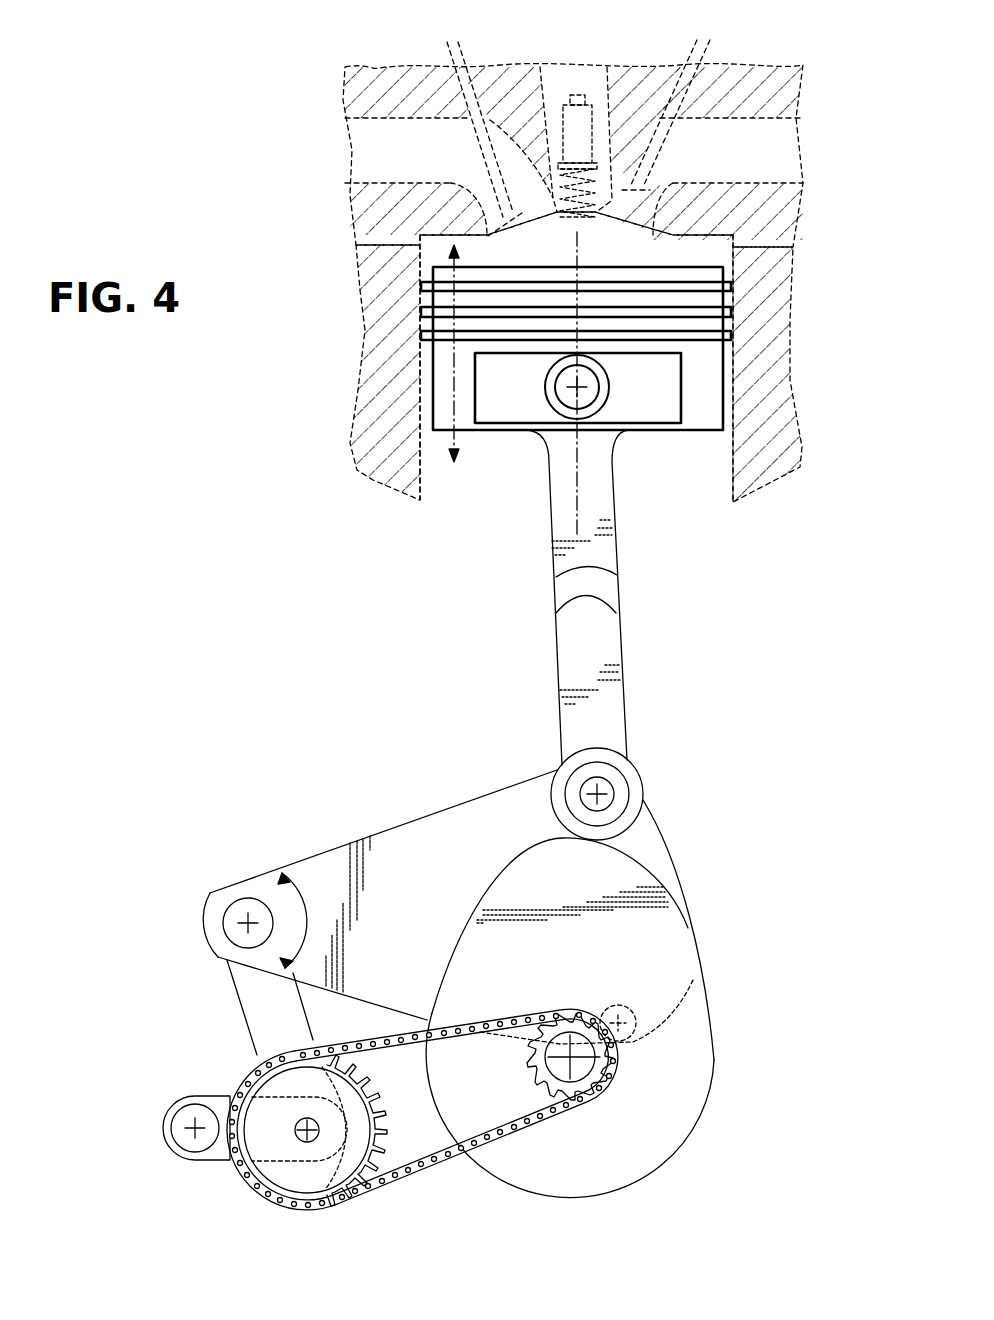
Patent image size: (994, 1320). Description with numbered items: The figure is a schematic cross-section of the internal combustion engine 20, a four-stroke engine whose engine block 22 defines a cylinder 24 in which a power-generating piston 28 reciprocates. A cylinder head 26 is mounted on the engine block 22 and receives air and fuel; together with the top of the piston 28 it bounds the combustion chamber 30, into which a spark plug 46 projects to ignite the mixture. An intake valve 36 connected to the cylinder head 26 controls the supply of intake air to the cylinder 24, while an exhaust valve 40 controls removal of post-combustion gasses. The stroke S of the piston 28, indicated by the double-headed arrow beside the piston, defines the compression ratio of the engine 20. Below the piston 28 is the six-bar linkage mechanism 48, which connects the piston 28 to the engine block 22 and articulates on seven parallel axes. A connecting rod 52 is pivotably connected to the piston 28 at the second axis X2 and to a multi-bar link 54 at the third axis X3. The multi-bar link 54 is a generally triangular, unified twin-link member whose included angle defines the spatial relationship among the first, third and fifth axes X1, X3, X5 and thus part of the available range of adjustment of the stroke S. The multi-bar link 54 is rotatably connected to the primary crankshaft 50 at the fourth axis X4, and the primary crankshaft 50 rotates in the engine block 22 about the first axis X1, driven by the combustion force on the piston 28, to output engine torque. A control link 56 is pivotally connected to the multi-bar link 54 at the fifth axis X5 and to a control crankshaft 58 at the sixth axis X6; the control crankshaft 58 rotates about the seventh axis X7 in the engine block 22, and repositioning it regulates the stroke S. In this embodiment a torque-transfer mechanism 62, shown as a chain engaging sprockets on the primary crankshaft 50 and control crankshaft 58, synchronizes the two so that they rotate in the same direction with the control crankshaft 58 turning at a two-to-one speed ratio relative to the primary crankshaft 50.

The internal combustion engine 20 is at (667, 550).
The engine block 22 is at (774, 364).
The cylinder 24 is at (733, 307).
The cylinder head 26 is at (768, 235).
The piston 28 is at (652, 268).
The combustion chamber 30 is at (542, 258).
The intake valve 36 is at (495, 190).
The exhaust valve 40 is at (680, 177).
The spark plug 46 is at (560, 75).
The six-bar linkage mechanism 48 is at (298, 772).
The primary crankshaft 50 is at (688, 928).
The connecting rod 52 is at (562, 507).
The multi-bar link 54 is at (220, 1160).
The control link 56 is at (242, 1025).
The control crankshaft 58 is at (477, 798).
The torque-transfer mechanism 62 is at (440, 1172).
The first axis X1 is at (572, 1060).
The second axis X2 is at (578, 390).
The third axis X3 is at (600, 792).
The fourth axis X4 is at (633, 1042).
The fifth axis X5 is at (246, 920).
The sixth axis X6 is at (313, 1137).
The seventh axis X7 is at (193, 1125).
The stroke S is at (458, 442).